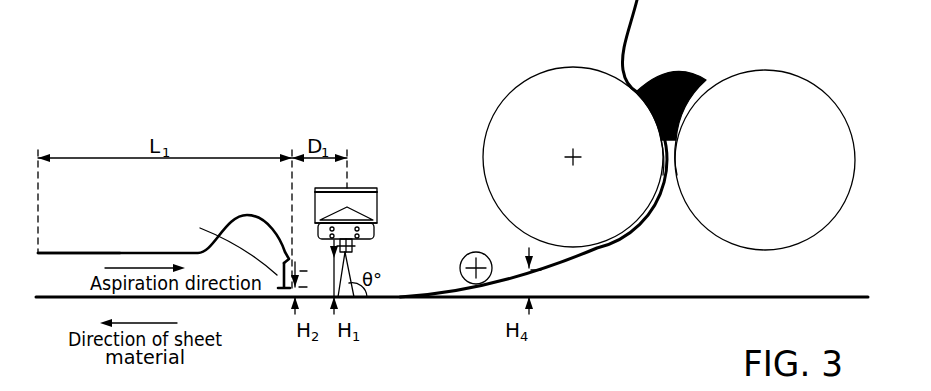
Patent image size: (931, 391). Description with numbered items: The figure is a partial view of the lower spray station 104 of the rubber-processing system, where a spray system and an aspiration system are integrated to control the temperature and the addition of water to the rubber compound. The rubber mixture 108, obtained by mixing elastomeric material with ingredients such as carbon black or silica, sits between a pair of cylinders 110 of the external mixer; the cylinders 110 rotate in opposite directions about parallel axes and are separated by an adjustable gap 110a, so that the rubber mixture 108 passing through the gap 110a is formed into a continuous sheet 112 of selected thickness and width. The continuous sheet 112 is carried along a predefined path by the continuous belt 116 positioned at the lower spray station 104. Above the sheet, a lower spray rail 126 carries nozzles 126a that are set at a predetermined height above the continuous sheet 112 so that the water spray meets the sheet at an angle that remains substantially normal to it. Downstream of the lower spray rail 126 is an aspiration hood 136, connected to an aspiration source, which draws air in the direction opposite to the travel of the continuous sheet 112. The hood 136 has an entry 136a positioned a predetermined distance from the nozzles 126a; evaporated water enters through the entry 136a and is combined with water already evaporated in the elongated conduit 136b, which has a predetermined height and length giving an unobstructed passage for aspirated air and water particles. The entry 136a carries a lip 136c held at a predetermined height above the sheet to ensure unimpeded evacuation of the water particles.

The lower spray station 104 is at (294, 75).
The rubber mixture 108 is at (683, 70).
The cylinders 110 is at (538, 103).
The adjustable gap 110a is at (668, 165).
The continuous sheet 112 is at (509, 274).
The continuous belt 116 is at (582, 300).
The lower spray rail 126 is at (361, 188).
The nozzles 126a is at (355, 250).
The aspiration hood 136 is at (253, 238).
The entry 136a is at (286, 292).
The elongated conduit 136b is at (82, 273).
The lip 136c is at (200, 228).